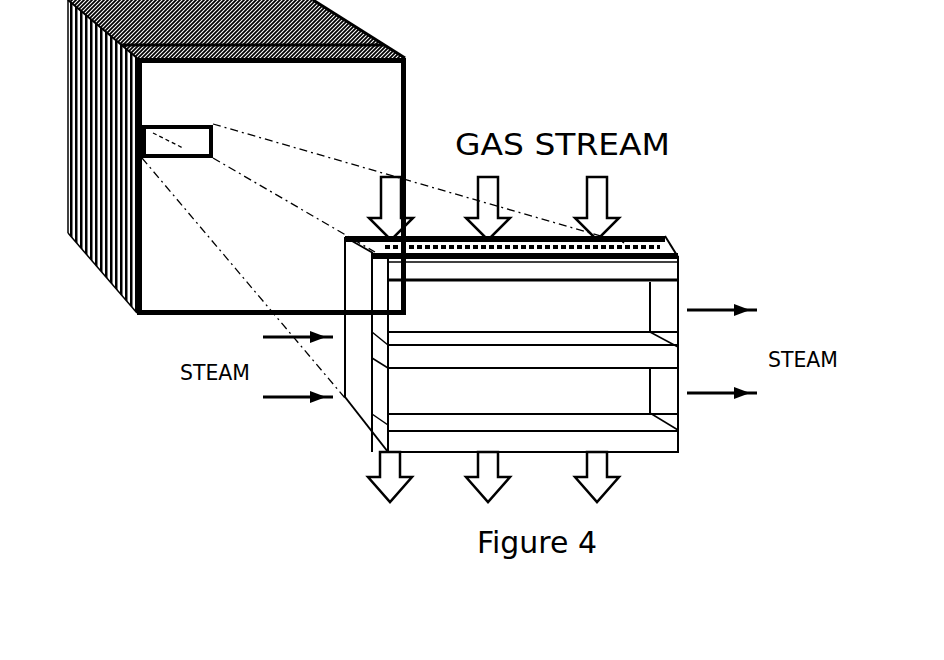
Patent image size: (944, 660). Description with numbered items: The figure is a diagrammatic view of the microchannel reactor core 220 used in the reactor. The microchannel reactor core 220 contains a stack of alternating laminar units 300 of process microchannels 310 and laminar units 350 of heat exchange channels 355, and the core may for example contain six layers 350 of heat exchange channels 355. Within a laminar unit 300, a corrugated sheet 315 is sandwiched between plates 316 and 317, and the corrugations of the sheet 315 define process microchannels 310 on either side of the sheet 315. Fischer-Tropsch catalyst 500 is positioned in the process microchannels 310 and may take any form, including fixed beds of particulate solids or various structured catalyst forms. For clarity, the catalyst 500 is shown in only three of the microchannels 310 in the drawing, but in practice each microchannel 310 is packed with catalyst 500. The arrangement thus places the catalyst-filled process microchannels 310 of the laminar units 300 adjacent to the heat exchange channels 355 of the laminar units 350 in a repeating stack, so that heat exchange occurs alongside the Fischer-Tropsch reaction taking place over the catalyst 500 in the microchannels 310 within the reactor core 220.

The microchannel reactor core 220 is at (414, 115).
The laminar unit of process microchannels 300 is at (618, 250).
The process microchannel 310 is at (375, 252).
The corrugated sheet 315 is at (614, 250).
The plate 316 is at (543, 257).
The plate 317 is at (445, 236).
The laminar unit of heat exchange channels 350 is at (663, 251).
The heat exchange channel 355 is at (643, 397).
The Fischer-Tropsch catalyst 500 is at (488, 243).